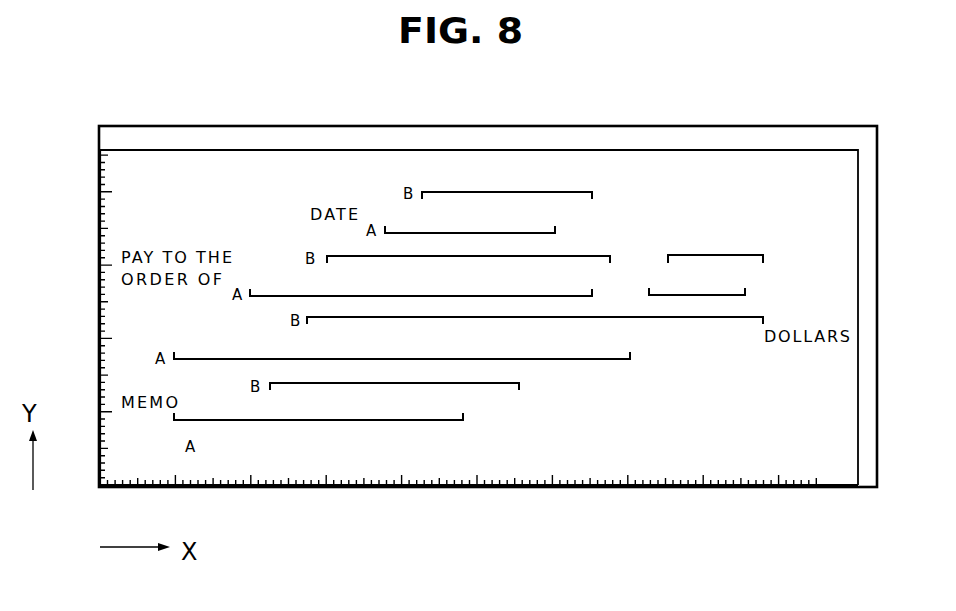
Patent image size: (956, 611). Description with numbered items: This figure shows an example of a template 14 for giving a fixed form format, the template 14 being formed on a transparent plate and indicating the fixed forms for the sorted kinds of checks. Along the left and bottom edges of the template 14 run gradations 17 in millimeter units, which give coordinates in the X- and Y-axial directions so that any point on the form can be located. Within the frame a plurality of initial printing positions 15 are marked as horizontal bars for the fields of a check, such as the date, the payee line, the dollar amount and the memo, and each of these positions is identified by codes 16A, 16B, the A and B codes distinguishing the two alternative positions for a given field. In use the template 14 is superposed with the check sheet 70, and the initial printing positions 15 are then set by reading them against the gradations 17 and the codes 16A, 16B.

The template 14 is at (752, 126).
The initial printing positions 15 is at (667, 257).
The code for the initial printing positions 16A is at (781, 251).
The code for the initial printing positions 16B is at (768, 291).
The gradations 17 is at (78, 173).
The check sheet 70 is at (236, 150).